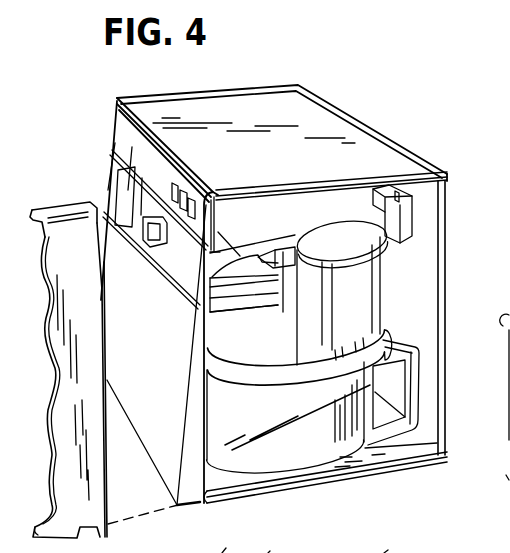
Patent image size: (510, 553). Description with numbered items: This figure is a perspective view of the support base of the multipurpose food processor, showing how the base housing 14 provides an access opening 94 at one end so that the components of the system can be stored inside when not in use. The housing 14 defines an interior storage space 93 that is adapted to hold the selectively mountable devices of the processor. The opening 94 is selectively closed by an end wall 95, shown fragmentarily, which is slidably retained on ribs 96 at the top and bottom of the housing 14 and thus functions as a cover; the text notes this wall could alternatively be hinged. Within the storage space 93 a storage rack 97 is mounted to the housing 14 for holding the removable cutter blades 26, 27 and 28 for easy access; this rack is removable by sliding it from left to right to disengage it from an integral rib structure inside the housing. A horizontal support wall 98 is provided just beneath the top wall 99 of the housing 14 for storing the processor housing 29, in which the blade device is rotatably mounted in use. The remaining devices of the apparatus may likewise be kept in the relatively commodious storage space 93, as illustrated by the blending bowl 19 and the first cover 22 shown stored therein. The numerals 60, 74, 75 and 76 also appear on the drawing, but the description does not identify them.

The housing 14 is at (370, 145).
The blending bowl 19 is at (360, 447).
The first cover 22 is at (253, 372).
The cutter blade 26 is at (248, 266).
The cutter blade 27 is at (236, 285).
The cutter blade 28 is at (300, 248).
The processor housing 29 is at (357, 205).
The side member 60 is at (509, 318).
The base member 74 is at (386, 552).
The base member 75 is at (222, 552).
The base member 76 is at (281, 546).
The interior storage space 93 is at (428, 281).
The opening 94 is at (436, 218).
The end wall 95 is at (58, 207).
The ribs 96 is at (257, 201).
The storage rack 97 is at (195, 335).
The horizontal support wall 98 is at (217, 240).
The top wall 99 is at (297, 118).